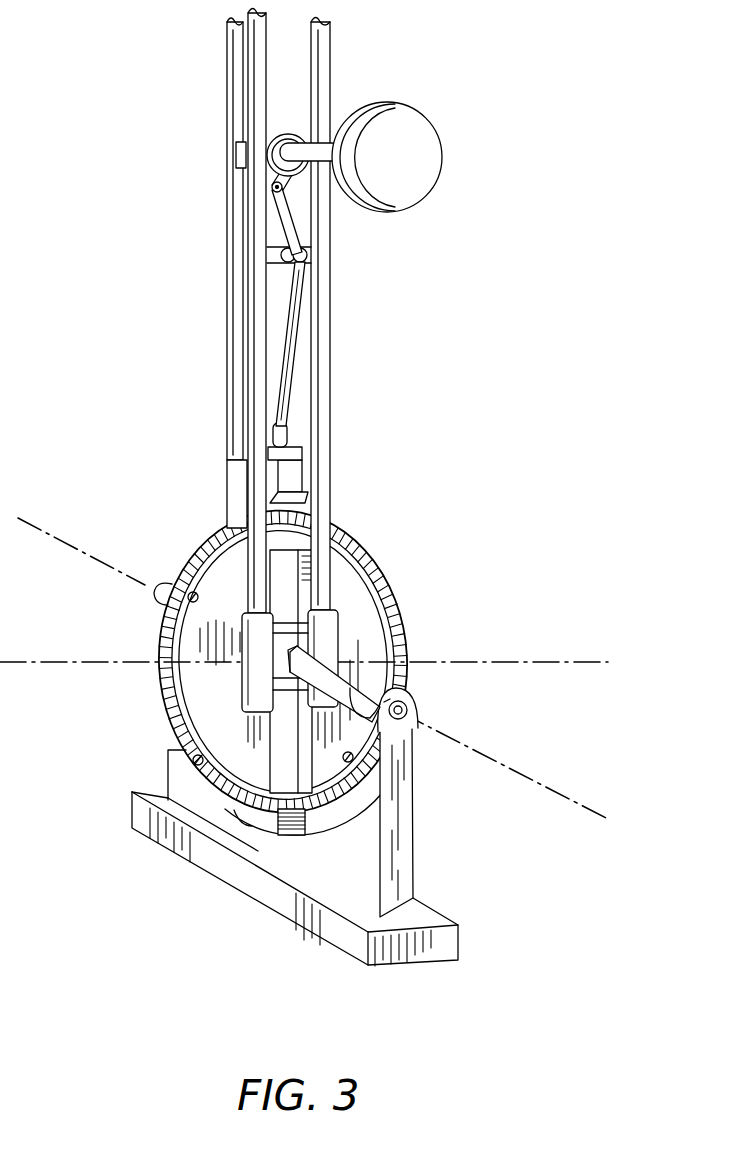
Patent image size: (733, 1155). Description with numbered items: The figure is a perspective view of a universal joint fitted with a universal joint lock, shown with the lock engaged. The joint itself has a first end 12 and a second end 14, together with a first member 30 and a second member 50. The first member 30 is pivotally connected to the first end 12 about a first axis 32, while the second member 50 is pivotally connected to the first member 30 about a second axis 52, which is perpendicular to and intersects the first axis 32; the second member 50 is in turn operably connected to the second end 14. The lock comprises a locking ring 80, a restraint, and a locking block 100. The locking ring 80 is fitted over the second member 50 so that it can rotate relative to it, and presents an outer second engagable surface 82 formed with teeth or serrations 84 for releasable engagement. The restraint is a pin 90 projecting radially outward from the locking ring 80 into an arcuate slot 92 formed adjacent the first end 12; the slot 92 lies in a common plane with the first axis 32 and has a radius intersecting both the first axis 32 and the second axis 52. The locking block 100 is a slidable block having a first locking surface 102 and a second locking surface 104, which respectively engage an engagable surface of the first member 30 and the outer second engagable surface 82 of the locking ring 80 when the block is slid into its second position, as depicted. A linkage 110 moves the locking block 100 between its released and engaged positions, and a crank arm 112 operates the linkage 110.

The first end 12 is at (227, 887).
The second end 14 is at (229, 337).
The first member 30 is at (335, 680).
The first axis 32 is at (592, 810).
The second member 50 is at (233, 575).
The second axis 52 is at (600, 660).
The locking ring 80 is at (160, 635).
The outer second engagable surface 82 is at (160, 715).
The teeth or serrations 84 is at (160, 673).
The pin 90 is at (297, 822).
The arcuate slot 92 is at (237, 812).
The locking block 100 is at (303, 466).
The first locking surface 102 is at (303, 502).
The second locking surface 104 is at (230, 525).
The linkage 110 is at (290, 308).
The crank arm 112 is at (437, 161).